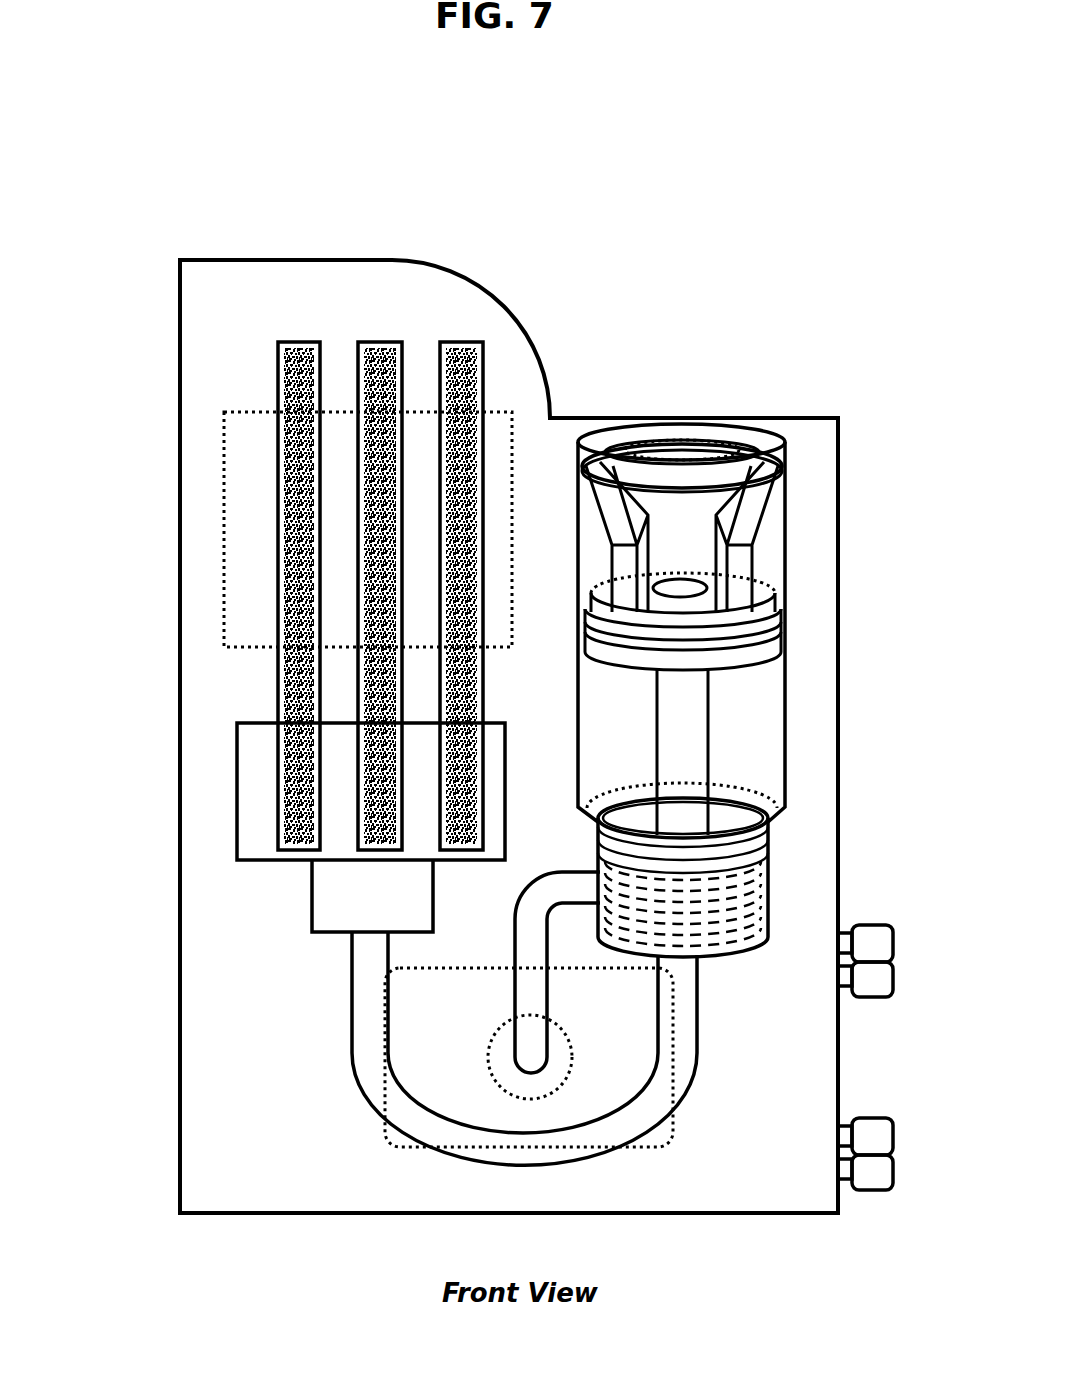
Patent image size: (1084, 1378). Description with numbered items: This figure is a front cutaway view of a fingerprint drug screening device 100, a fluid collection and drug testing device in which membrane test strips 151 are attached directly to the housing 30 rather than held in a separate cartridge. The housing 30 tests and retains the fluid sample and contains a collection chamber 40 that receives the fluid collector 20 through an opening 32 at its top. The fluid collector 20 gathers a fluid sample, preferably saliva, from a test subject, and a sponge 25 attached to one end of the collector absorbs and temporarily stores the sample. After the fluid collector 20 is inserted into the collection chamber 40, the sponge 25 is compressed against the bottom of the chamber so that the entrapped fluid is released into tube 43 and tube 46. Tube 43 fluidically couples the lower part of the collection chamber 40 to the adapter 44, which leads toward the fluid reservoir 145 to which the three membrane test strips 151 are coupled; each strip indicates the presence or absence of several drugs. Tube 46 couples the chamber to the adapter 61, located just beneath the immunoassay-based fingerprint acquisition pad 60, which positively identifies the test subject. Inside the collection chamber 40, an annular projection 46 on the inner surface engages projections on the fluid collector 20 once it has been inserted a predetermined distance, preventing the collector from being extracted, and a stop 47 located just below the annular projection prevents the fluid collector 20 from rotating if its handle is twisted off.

The fingerprint drug screening device 100 is at (436, 152).
The housing 30 is at (460, 281).
The membrane test strips 151 is at (338, 313).
The opening 32 is at (690, 410).
The tube / annular projection 46 is at (513, 922).
The stop 47 is at (778, 485).
The collection chamber 40 is at (785, 560).
The fluid collector 20 is at (768, 673).
The sponge 25 is at (763, 898).
The tube 43 is at (700, 1025).
The immunoassay-based fingerprint acquisition pad 60 is at (672, 1140).
The adapter 61 is at (502, 1027).
The adapter 44 is at (335, 931).
The fluid reservoir 145 is at (237, 862).